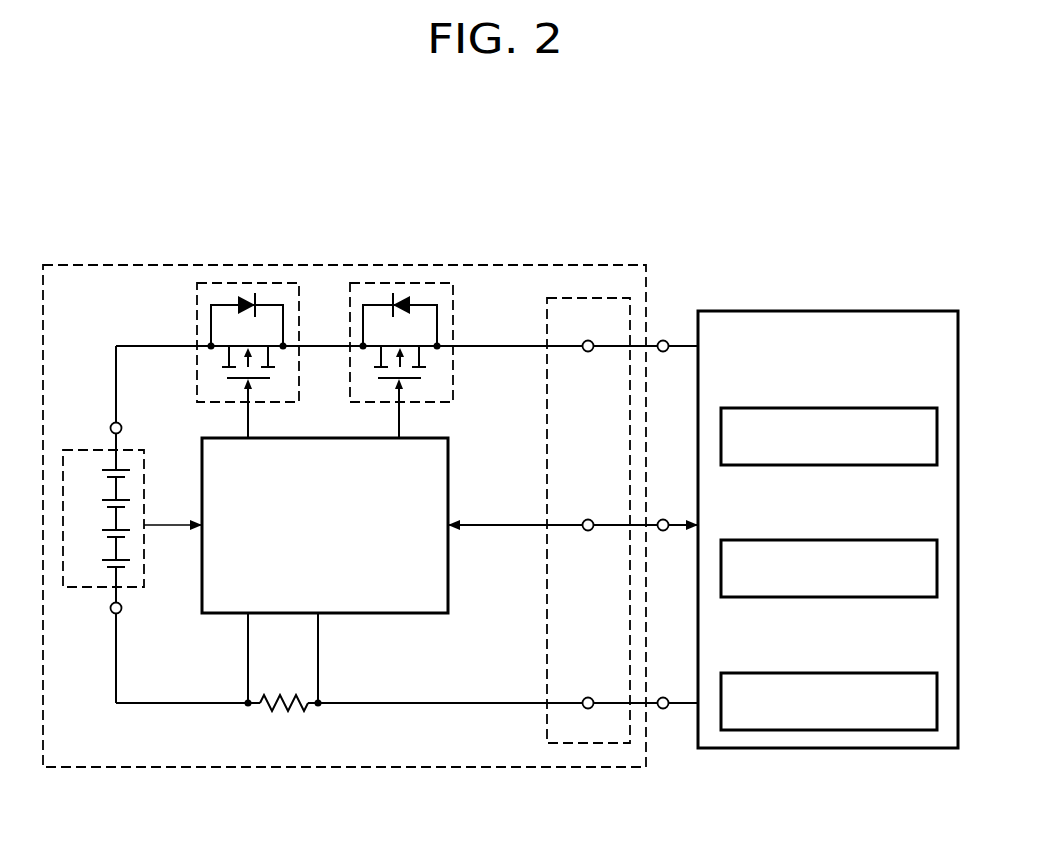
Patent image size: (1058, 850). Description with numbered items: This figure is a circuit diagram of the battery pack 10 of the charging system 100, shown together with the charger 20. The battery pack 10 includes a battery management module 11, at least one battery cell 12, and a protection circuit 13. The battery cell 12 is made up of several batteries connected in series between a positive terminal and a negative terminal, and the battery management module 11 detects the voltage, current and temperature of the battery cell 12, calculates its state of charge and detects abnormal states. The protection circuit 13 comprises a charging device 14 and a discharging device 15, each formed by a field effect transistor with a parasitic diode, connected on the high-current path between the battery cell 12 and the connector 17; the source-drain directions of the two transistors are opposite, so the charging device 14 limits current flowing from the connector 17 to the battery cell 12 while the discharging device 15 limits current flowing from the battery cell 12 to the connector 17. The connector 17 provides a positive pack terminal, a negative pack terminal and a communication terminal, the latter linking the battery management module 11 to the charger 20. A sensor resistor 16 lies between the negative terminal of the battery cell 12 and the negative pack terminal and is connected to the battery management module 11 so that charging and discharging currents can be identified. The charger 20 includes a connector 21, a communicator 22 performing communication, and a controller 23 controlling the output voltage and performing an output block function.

The charging system 100 is at (954, 214).
The battery pack 10 is at (98, 265).
The battery management module 11 is at (433, 438).
The battery cell 12 is at (88, 450).
The protection circuit 13 is at (380, 223).
The charging device 14 is at (265, 283).
The discharging device 15 is at (376, 283).
The sensor resistor 16 is at (282, 710).
The connector 17 is at (589, 298).
The charger 20 is at (890, 311).
The connector 21 is at (873, 408).
The communicator 22 is at (873, 540).
The controller 23 is at (873, 673).